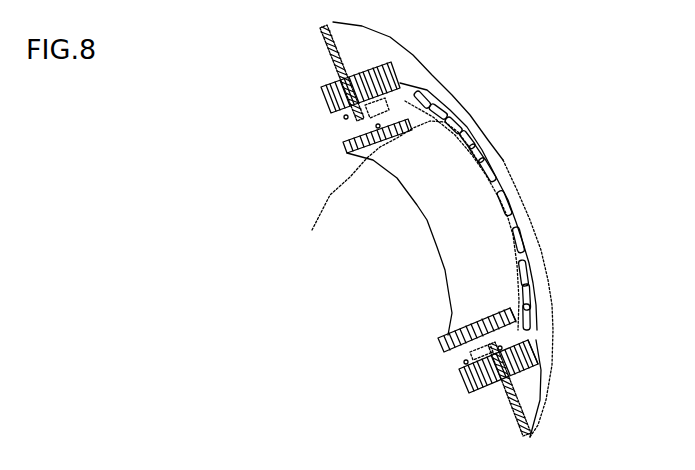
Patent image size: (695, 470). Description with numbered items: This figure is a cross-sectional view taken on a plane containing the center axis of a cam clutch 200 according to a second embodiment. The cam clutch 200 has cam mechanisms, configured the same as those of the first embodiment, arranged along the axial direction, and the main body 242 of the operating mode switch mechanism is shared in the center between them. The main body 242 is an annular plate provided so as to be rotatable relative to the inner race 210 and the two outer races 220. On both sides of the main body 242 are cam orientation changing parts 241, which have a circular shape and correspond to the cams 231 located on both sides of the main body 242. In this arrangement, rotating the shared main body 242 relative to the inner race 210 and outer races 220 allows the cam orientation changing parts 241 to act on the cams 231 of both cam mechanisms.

The cam clutch 200 is at (548, 87).
The inner race 210 is at (522, 223).
The outer race 220 is at (327, 101).
The cam 231 is at (357, 116).
The cam orientation changing part 241 is at (314, 226).
The main body 242 is at (330, 57).